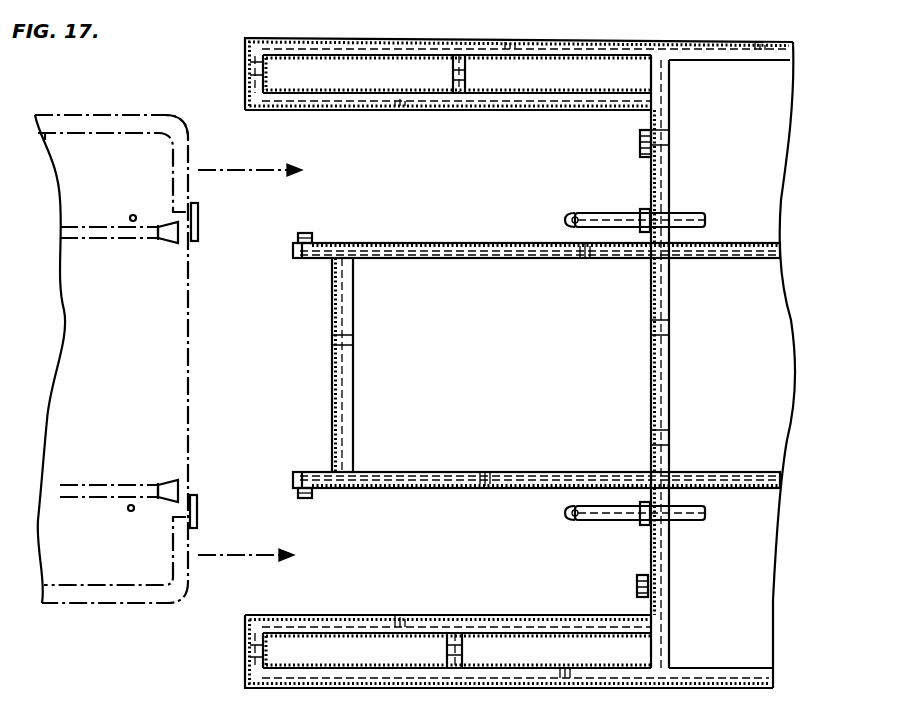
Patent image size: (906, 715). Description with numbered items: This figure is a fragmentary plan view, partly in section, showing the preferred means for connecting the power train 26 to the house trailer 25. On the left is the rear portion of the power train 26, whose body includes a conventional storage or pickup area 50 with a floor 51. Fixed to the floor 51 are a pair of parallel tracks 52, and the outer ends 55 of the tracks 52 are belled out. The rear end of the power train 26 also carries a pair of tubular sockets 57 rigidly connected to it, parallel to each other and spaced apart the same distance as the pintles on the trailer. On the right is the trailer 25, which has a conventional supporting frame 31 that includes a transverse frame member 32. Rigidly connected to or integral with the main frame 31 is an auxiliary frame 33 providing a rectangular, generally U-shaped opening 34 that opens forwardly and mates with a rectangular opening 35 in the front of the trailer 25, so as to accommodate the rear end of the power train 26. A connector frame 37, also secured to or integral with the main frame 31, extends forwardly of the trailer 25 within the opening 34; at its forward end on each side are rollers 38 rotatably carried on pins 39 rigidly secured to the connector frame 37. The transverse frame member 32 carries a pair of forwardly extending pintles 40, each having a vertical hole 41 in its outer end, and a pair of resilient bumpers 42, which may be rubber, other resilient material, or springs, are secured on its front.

The house trailer 25 is at (500, 348).
The power train 26 is at (186, 112).
The supporting frame 31 is at (826, 36).
The transverse frame member 32 is at (669, 358).
The auxiliary frame 33 is at (392, 82).
The U-shaped opening 34 is at (262, 106).
The rectangular opening 35 is at (298, 388).
The connector frame 37 is at (509, 244).
The rollers 38 is at (322, 214).
The pins 39 is at (302, 258).
The pintles 40 is at (624, 213).
The vertical hole 41 is at (578, 212).
The resilient bumpers 42 is at (640, 146).
The pickup area 50 is at (112, 155).
The floor 51 is at (112, 203).
The tracks 52 is at (152, 253).
The outer ends 55 is at (170, 242).
The tubular sockets 57 is at (199, 212).